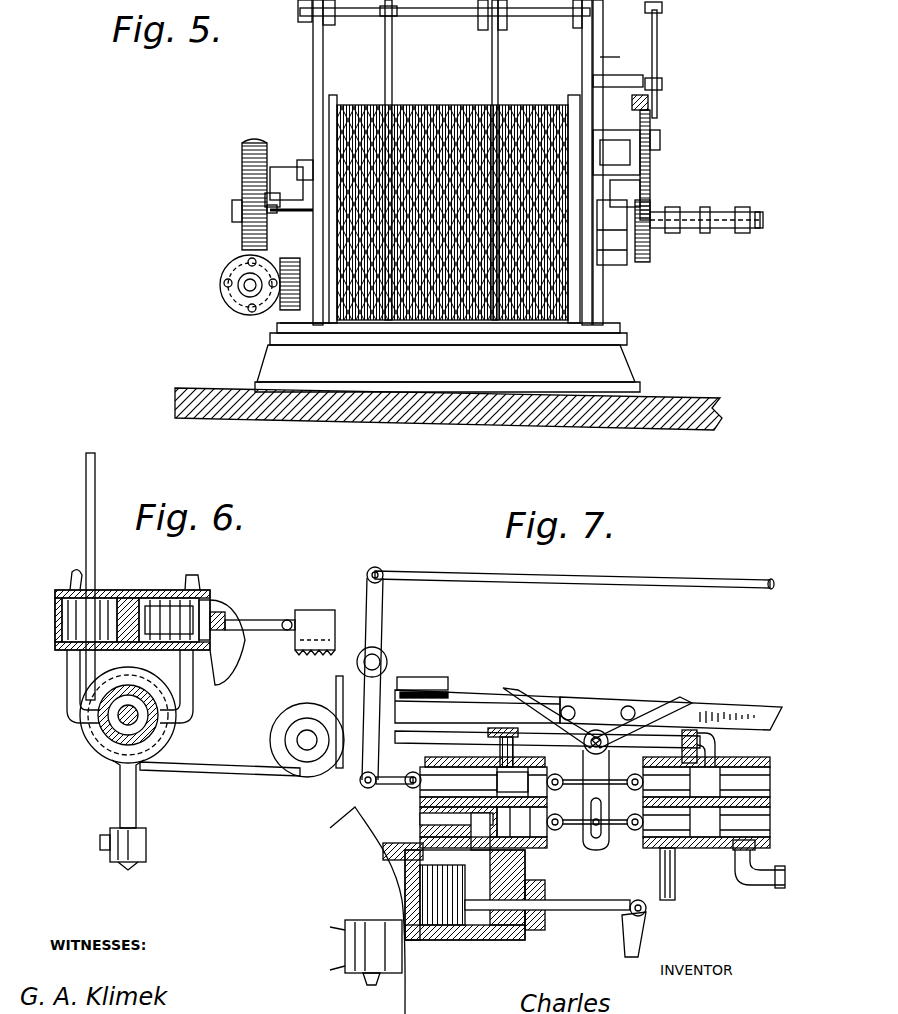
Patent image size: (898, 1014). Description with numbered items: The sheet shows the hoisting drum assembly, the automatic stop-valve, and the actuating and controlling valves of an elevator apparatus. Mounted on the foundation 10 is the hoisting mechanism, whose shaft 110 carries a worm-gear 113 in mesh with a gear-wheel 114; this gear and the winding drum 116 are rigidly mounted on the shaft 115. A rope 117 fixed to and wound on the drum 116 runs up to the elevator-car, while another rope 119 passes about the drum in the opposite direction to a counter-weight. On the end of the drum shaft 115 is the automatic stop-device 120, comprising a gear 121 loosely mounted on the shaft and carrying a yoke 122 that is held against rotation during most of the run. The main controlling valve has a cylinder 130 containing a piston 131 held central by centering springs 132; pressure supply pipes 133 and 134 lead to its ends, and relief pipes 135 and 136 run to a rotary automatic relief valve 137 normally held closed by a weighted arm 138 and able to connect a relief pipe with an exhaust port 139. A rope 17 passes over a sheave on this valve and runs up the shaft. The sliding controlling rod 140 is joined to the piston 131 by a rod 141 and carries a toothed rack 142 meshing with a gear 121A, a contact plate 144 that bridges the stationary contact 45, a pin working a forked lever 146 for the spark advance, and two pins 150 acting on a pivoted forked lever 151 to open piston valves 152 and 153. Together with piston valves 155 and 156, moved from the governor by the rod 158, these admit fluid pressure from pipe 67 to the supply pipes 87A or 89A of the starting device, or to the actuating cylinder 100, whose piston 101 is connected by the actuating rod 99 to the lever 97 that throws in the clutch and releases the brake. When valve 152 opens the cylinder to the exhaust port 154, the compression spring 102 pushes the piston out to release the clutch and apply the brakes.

In FIG. 5, the foundation 10 is at (612, 372).
In FIG. 5, the rope 17 is at (620, 57).
In FIG. 6, the rope 17 is at (232, 758).
In FIG. 7, the stationary contact 45 is at (440, 688).
In FIG. 7, the fluid pressure supply pipe 67 is at (425, 734).
In FIG. 7, the supply pipe 87A is at (672, 879).
In FIG. 7, the supply pipe 89A is at (771, 890).
In FIG. 7, the lever 97 is at (639, 944).
In FIG. 7, the actuating rod 99 is at (628, 916).
In FIG. 7, the actuating cylinder 100 is at (476, 926).
In FIG. 7, the piston 101 is at (438, 936).
In FIG. 7, the compression spring 102 is at (430, 936).
In FIG. 5, the shaft 110 is at (249, 287).
In FIG. 5, the worm-gear 113 is at (236, 283).
In FIG. 5, the gear-wheel 114 is at (243, 152).
In FIG. 5, the shaft 115 is at (238, 206).
In FIG. 5, the winding drum 116 is at (458, 118).
In FIG. 5, the rope 117 is at (493, 64).
In FIG. 5, the rope 119 is at (383, 58).
In FIG. 5, the automatic stop-device 120 is at (691, 213).
In FIG. 5, the gear 121 is at (645, 262).
In FIG. 5, the gear 121A is at (651, 135).
In FIG. 5, the yoke 122 is at (728, 232).
In FIG. 6, the cylinder of main controlling valve 130 is at (122, 590).
In FIG. 6, the piston 131 is at (118, 650).
In FIG. 6, the centering springs 132 is at (62, 610).
In FIG. 6, the pressure supply pipe 133 is at (75, 572).
In FIG. 6, the pressure supply pipe 134 is at (195, 586).
In FIG. 6, the relief pipe 135 is at (78, 678).
In FIG. 6, the relief pipe 136 is at (192, 706).
In FIG. 6, the rotary automatic relief valve 137 is at (110, 743).
In FIG. 6, the weighted arm 138 is at (141, 851).
In FIG. 6, the exhaust port 139 is at (127, 690).
In FIG. 6, the sliding controlling rod 140 is at (333, 610).
In FIG. 7, the sliding controlling rod 140 is at (735, 698).
In FIG. 6, the rod 141 is at (263, 632).
In FIG. 5, the toothed rack 142 is at (650, 102).
In FIG. 6, the toothed rack 142 is at (330, 653).
In FIG. 7, the contact plate 144 is at (482, 694).
In FIG. 5, the forked lever 146 is at (658, 38).
In FIG. 7, the pins 150 is at (628, 707).
In FIG. 7, the pivoted forked lever 151 is at (596, 851).
In FIG. 7, the piston valve 152 is at (556, 839).
In FIG. 7, the piston valve 153 is at (646, 846).
In FIG. 7, the exhaust port 154 is at (425, 818).
In FIG. 7, the piston valve 155 is at (410, 790).
In FIG. 7, the piston valve 156 is at (743, 783).
In FIG. 7, the rod 158 is at (595, 586).